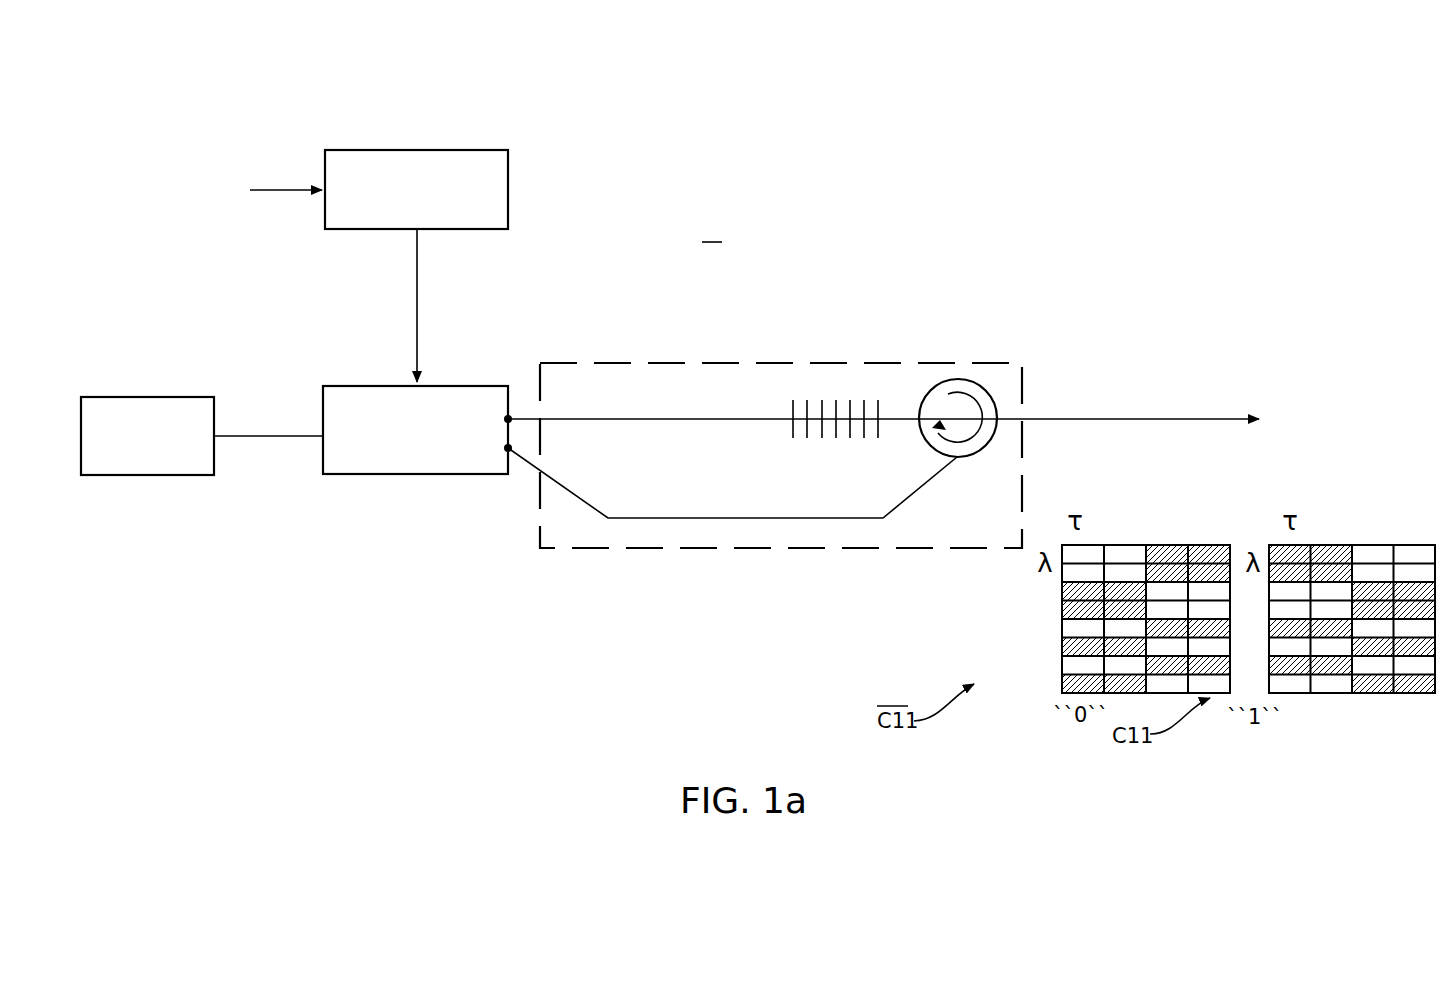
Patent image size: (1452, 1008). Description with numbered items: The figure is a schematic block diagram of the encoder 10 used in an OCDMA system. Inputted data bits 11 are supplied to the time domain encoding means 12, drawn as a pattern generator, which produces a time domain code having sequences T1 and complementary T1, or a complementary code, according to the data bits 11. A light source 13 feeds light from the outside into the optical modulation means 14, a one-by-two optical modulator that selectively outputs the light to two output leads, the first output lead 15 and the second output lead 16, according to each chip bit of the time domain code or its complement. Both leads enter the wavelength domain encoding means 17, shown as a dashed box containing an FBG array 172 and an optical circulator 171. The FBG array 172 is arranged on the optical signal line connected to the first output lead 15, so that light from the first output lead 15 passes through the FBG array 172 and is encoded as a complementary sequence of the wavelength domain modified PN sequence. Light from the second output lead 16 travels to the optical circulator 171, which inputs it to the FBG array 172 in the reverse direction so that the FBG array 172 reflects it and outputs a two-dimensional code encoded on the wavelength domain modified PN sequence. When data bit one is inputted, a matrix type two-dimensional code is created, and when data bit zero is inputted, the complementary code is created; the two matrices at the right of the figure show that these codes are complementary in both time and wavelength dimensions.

The encoder 10 is at (604, 124).
The data bits 11 is at (181, 142).
The time domain encoding means 12 is at (386, 160).
The light source 13 is at (130, 478).
The optical modulation means 14 is at (362, 462).
The first output lead 15 is at (509, 415).
The second output lead 16 is at (508, 451).
The wavelength domain encoding means 17 is at (650, 553).
The optical circulator 171 is at (962, 458).
The FBG array 172 is at (830, 396).